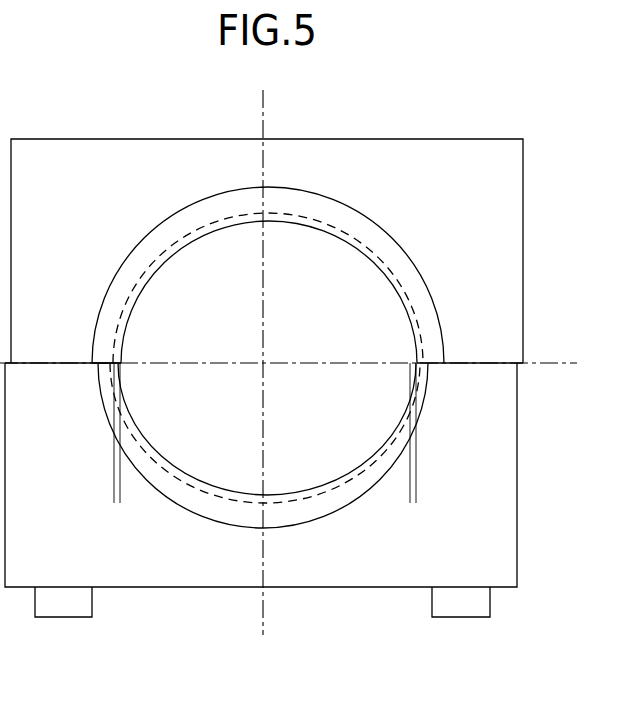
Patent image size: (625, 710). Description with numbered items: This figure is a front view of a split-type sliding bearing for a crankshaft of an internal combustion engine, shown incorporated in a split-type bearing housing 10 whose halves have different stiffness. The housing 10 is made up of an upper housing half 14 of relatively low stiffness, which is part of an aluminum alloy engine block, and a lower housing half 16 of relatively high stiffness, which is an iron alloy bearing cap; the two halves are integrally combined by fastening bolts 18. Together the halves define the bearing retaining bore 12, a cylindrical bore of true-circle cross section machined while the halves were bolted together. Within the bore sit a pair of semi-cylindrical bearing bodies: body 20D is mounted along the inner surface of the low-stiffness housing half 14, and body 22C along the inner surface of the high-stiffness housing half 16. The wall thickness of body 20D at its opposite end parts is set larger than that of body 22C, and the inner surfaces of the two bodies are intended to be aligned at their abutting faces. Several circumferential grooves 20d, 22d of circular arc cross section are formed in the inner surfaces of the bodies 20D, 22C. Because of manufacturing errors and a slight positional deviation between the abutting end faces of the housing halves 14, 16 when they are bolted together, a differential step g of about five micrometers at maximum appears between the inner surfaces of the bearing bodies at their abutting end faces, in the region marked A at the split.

The split-type bearing housing 10 is at (408, 112).
The bearing retaining bore 12 is at (388, 250).
The housing half 14 is at (512, 250).
The housing half 16 is at (506, 472).
The fastening bolts 18 is at (63, 610).
The semi-cylindrical bearing body 20D is at (175, 228).
The circumferential grooves 20d is at (387, 272).
The semi-cylindrical bearing body 22C is at (172, 490).
The circumferential grooves 22d is at (388, 443).
The part where the differential step is caused A is at (80, 344).
The differential step g is at (468, 485).